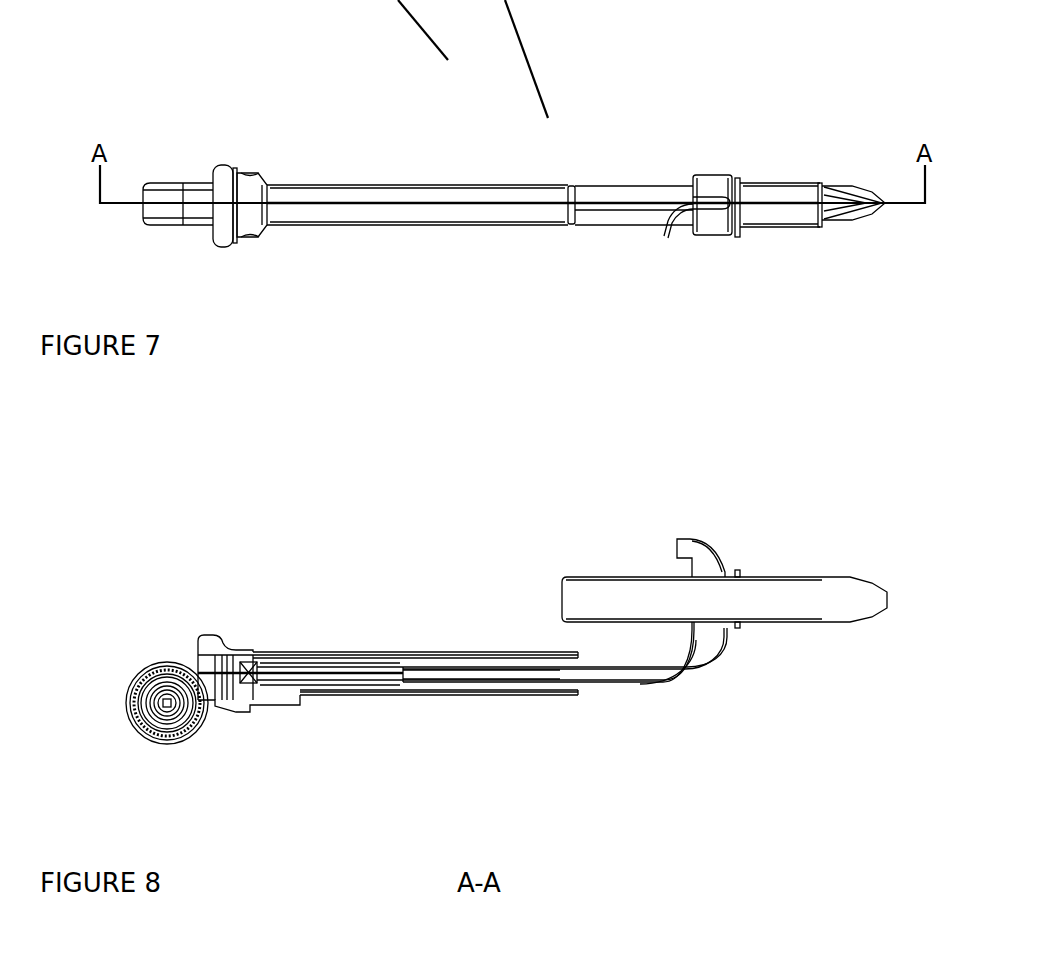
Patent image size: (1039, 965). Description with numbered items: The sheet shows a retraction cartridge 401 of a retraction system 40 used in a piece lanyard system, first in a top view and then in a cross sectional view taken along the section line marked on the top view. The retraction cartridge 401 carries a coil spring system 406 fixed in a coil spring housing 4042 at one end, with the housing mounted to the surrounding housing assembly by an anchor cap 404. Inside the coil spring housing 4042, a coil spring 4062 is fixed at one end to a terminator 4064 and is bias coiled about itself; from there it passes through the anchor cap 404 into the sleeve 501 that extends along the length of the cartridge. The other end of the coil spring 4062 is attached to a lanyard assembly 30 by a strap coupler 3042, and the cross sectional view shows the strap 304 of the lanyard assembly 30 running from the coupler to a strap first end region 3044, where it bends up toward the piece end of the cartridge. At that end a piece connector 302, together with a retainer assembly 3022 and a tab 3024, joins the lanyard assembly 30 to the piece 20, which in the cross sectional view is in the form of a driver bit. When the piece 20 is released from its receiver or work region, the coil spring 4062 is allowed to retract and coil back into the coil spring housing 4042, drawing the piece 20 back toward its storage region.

In FIG. 7, the piece 20 is at (790, 217).
In FIG. 8, the piece 20 is at (849, 580).
In FIG. 8, the lanyard assembly 30 is at (663, 692).
In FIG. 8, the retraction system 40 is at (517, 705).
In FIG. 7, the piece connector 302 is at (710, 185).
In FIG. 8, the piece connector 302 is at (722, 573).
In FIG. 8, the strap 304 is at (614, 678).
In FIG. 7, the retraction cartridge 401 is at (375, 240).
In FIG. 8, the retraction cartridge 401 is at (328, 625).
In FIG. 7, the anchor cap 404 is at (239, 165).
In FIG. 8, the anchor cap 404 is at (228, 648).
In FIG. 8, the coil spring system 406 is at (518, 625).
In FIG. 7, the sleeve 501 is at (445, 183).
In FIG. 8, the sleeve 501 is at (392, 657).
In FIG. 7, the retainer assembly 3022 is at (740, 182).
In FIG. 7, the tab 3024 is at (680, 236).
In FIG. 8, the tab 3024 is at (703, 555).
In FIG. 8, the strap coupler 3042 is at (405, 680).
In FIG. 8, the strap first end region 3044 is at (697, 663).
In FIG. 7, the coil spring housing 4042 is at (180, 188).
In FIG. 8, the coil spring housing 4042 is at (160, 665).
In FIG. 8, the coil spring 4062 is at (330, 680).
In FIG. 8, the terminator 4064 is at (168, 705).